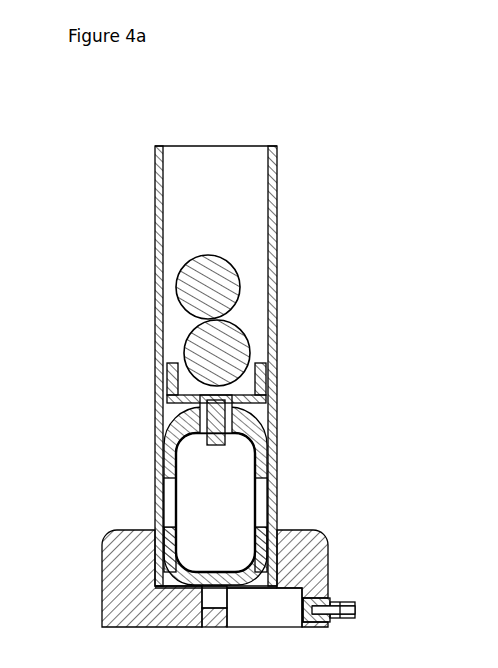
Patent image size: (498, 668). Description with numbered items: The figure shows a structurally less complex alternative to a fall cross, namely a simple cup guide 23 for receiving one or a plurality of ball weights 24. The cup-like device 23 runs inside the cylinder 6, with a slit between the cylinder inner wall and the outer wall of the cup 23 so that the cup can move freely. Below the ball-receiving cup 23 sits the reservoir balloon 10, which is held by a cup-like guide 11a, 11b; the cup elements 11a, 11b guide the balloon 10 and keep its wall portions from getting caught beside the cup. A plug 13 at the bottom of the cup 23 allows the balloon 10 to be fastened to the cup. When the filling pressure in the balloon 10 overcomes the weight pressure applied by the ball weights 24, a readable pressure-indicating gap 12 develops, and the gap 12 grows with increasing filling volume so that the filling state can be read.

The cylinder 6 is at (271, 258).
The ball weights 24 is at (236, 351).
The cup guide 23 is at (250, 404).
The plug 13 is at (497, 443).
The cup-like guide 11b is at (172, 434).
The pressure-indicating gap 12 is at (152, 480).
The reservoir balloon 10 is at (215, 504).
The cup-like guide 11a is at (167, 565).